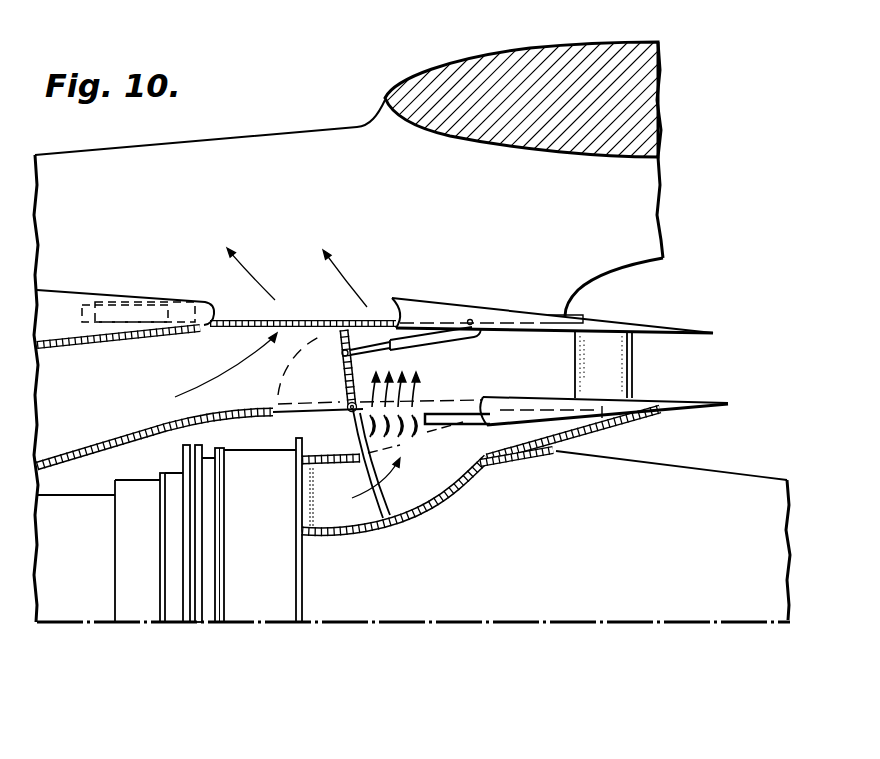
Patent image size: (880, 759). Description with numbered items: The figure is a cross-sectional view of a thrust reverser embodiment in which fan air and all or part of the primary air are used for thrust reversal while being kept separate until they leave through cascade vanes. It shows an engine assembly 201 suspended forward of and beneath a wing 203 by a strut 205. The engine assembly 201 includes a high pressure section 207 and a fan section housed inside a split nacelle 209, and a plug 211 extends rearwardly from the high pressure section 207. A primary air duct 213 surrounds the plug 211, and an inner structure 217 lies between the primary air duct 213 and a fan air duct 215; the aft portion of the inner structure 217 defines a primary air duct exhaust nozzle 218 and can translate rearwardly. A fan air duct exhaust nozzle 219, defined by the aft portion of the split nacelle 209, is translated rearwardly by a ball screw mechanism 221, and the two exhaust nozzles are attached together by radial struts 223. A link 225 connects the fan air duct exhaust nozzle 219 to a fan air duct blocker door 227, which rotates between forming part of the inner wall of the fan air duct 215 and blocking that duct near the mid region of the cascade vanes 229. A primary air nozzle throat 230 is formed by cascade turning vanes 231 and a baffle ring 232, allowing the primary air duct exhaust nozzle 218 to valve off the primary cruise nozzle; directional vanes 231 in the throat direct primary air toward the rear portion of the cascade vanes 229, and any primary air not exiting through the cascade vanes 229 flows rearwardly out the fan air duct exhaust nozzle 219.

The engine assembly 201 is at (635, 302).
The wing 203 is at (445, 72).
The strut 205 is at (295, 131).
The high pressure section 207 is at (166, 602).
The split nacelle 209 is at (65, 298).
The plug 211 is at (747, 480).
The primary air duct 213 is at (422, 488).
The fan air duct 215 is at (178, 383).
The inner structure 217 is at (290, 446).
The primary air duct exhaust nozzle 218 is at (635, 423).
The fan air duct exhaust nozzle 219 is at (488, 306).
The ball screw mechanism 221 is at (127, 308).
The radial struts 223 is at (621, 366).
The link 225 is at (432, 338).
The fan air duct blocker door 227 is at (341, 375).
The cascade vanes 229 is at (293, 320).
The primary air nozzle throat 230 is at (429, 400).
The directional vanes 231 is at (405, 438).
The baffle ring 232 is at (465, 415).